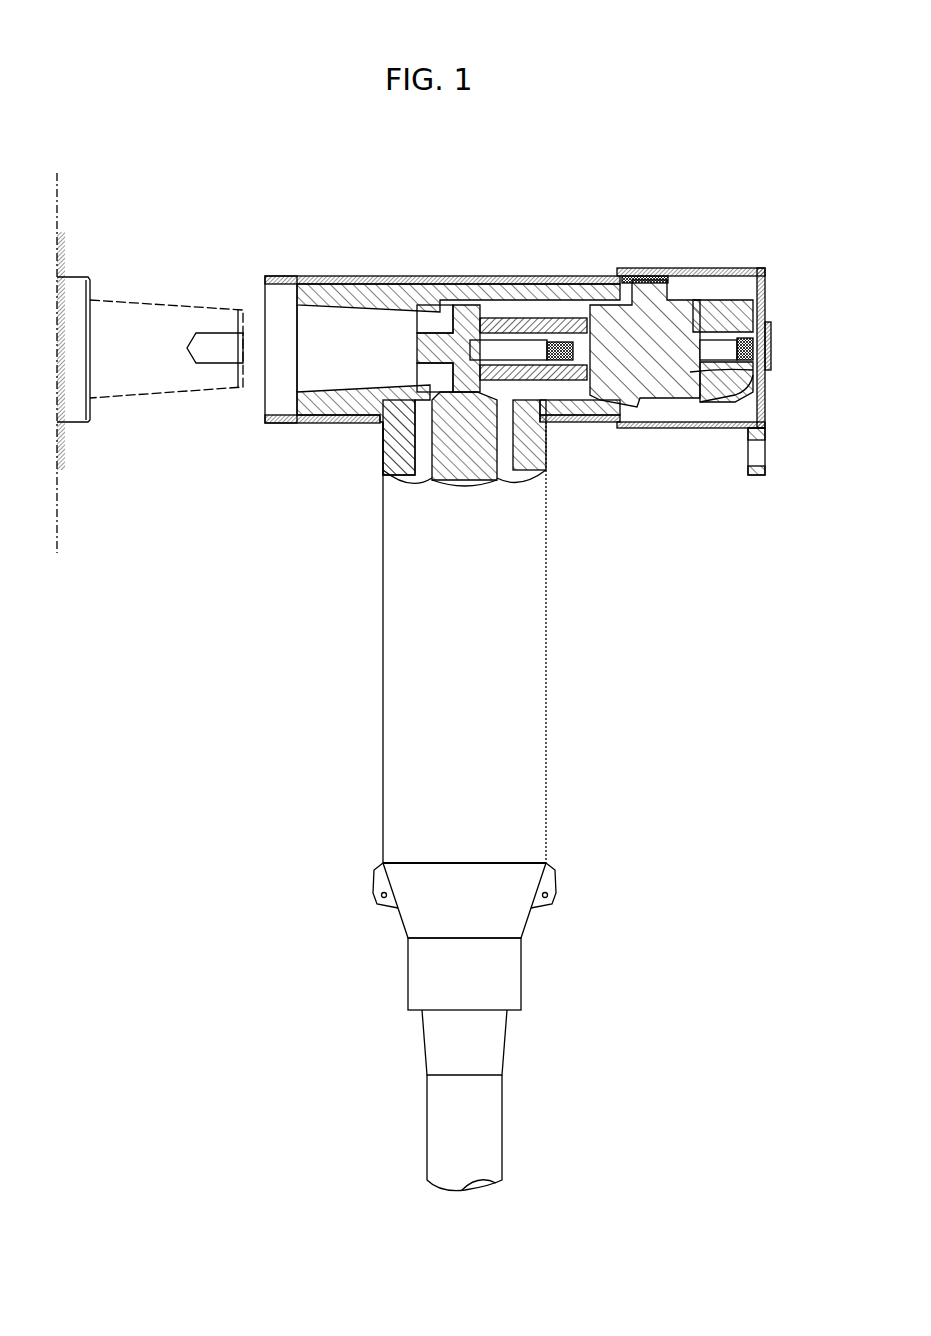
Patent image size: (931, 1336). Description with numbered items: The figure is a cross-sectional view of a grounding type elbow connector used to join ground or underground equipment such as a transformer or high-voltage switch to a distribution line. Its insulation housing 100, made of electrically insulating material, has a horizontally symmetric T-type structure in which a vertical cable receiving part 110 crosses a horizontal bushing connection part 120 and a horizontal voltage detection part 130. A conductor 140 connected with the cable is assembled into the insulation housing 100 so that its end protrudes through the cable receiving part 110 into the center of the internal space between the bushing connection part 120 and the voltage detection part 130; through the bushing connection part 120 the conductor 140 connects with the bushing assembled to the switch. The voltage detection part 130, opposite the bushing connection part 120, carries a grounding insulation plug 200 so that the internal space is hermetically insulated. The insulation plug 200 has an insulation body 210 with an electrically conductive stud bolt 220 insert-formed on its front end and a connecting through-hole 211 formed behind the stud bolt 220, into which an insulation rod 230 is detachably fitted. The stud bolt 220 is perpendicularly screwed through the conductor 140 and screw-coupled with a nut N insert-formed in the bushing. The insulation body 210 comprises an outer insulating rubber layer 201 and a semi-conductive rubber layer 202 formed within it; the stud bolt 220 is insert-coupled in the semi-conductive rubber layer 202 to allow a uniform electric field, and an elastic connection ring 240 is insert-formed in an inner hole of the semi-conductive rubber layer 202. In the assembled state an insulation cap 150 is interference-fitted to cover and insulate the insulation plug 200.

The insulation housing 100 is at (600, 748).
The cable receiving part 110 is at (538, 645).
The bushing connection part 120 is at (345, 330).
The voltage detection part 130 is at (578, 296).
The conductor 140 is at (430, 456).
The insulation cap 150 is at (764, 432).
The grounding insulation plug 200 is at (688, 300).
The outer insulating rubber layer 201 is at (732, 387).
The semi-conductive rubber layer 202 is at (562, 417).
The insulation body 210 is at (638, 312).
The connecting through-hole 211 is at (529, 326).
The stud bolt 220 is at (450, 334).
The insulation rod 230 is at (694, 333).
The elastic connection ring 240 is at (592, 408).
The nut N is at (206, 336).